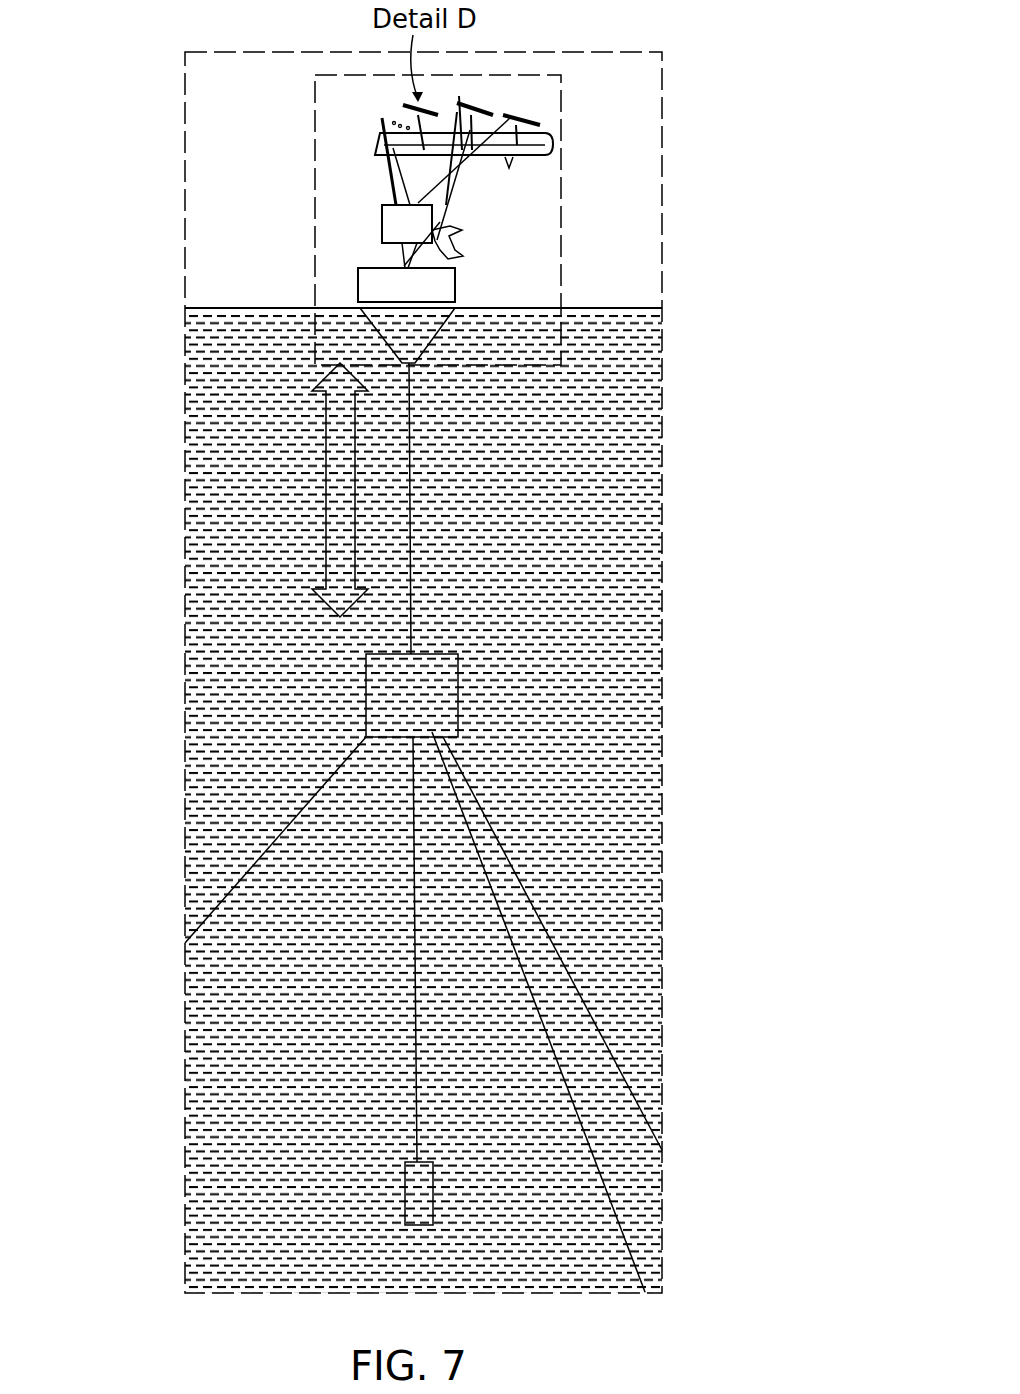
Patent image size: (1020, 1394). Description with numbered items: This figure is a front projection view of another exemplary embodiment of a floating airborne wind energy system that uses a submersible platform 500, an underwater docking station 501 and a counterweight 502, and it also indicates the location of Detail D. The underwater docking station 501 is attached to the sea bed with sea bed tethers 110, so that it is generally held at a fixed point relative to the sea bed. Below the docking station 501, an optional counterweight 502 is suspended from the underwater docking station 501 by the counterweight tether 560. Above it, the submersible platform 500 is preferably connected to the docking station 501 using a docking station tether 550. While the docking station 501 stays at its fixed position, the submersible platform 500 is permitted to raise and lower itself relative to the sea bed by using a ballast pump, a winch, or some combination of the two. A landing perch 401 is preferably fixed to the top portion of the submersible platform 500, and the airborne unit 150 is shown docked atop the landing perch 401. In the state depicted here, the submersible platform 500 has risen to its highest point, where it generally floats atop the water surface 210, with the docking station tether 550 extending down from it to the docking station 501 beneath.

The sea bed tethers 110 is at (312, 795).
The airborne unit 150 is at (545, 143).
The water surface 210 is at (233, 303).
The landing perch 401 is at (366, 182).
The submersible platform 500 is at (452, 343).
The underwater docking station 501 is at (432, 680).
The counterweight 502 is at (432, 1180).
The docking station tether 550 is at (411, 493).
The counterweight tether 560 is at (414, 976).